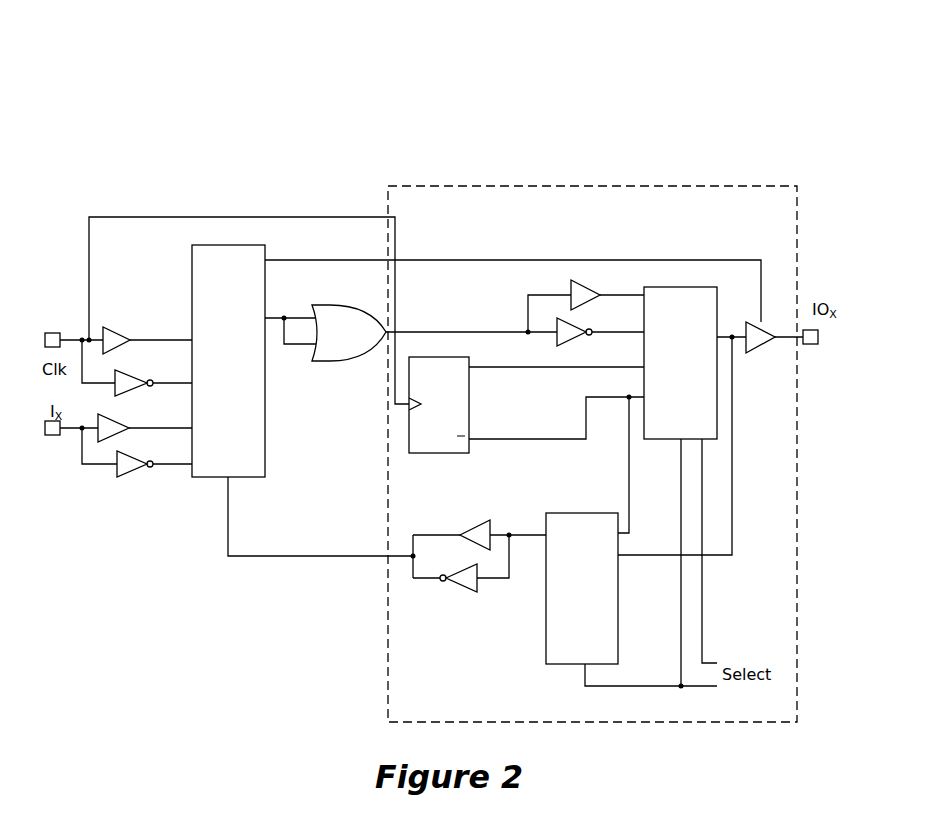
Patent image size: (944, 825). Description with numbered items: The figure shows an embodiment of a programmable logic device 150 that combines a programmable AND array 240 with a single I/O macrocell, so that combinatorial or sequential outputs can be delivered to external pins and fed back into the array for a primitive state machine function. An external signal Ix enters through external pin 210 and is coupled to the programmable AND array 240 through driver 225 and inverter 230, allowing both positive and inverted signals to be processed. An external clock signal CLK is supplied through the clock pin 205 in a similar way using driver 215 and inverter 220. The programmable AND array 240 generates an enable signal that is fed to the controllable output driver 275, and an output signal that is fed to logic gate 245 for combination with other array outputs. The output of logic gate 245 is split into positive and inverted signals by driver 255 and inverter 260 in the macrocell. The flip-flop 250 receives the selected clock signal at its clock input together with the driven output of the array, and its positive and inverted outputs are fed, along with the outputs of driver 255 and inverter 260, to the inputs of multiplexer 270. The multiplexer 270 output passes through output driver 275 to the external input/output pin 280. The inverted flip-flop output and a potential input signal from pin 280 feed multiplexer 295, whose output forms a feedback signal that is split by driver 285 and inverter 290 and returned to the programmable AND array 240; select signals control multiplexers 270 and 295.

The programmable logic device 150 is at (388, 115).
The clock input pin 205 is at (53, 333).
The external pin 210 is at (52, 435).
The driver 215 is at (128, 321).
The inverter 220 is at (126, 373).
The driver 225 is at (113, 421).
The inverter 230 is at (128, 456).
The programmable AND array 240 is at (265, 420).
The logic gate 245 is at (329, 352).
The flip-flop 250 is at (469, 388).
The driver 255 is at (584, 287).
The inverter 260 is at (567, 341).
The multiplexer 270 is at (681, 287).
The output driver 275 is at (759, 347).
The external input/output pin 280 is at (819, 338).
The driver 285 is at (479, 520).
The inverter 290 is at (448, 583).
The multiplexer 295 is at (551, 513).